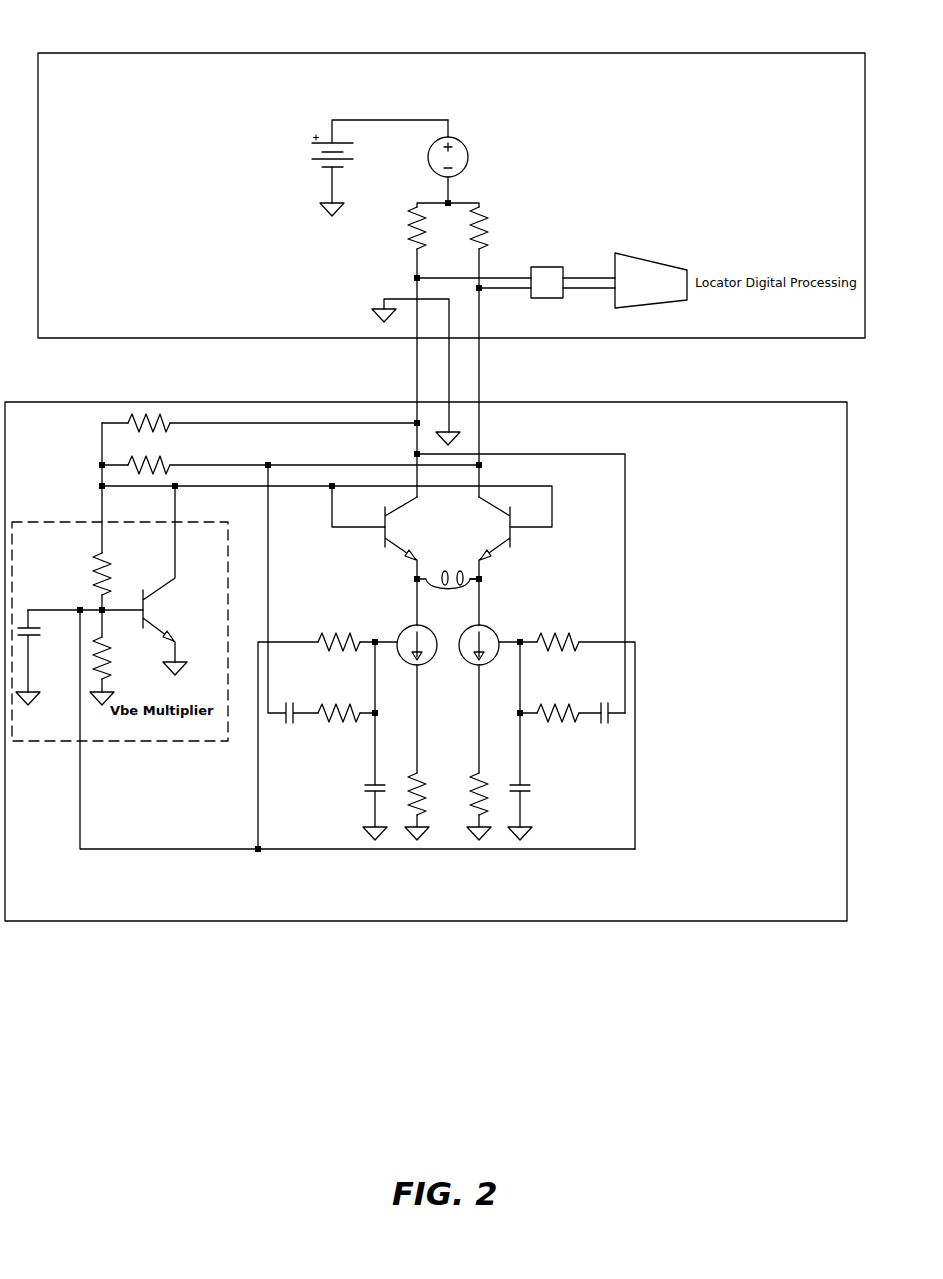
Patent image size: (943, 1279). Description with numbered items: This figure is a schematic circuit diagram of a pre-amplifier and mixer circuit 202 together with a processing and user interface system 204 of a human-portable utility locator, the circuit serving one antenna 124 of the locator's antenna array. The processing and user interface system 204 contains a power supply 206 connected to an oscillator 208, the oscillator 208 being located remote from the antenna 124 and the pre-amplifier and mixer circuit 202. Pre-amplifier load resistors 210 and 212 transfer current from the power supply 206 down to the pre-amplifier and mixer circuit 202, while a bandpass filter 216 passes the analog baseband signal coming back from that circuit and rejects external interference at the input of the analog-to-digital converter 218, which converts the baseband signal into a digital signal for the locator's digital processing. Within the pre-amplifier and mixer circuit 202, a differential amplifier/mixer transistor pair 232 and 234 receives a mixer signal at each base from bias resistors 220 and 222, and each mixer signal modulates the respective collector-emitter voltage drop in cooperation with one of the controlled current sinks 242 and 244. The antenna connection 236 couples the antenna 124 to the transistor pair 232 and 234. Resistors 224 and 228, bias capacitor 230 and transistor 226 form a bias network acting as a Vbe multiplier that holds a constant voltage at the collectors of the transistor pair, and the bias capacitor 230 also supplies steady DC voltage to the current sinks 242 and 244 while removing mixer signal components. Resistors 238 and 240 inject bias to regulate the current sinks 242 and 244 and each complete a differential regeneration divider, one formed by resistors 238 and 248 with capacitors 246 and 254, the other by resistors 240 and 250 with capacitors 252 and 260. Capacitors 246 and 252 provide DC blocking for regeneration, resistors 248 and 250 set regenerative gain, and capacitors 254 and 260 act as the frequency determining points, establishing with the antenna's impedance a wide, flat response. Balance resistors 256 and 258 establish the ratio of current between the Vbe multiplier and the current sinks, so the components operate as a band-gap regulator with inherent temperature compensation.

The pre-amplifier and mixer circuit 202 is at (710, 442).
The processing and user interface system 204 is at (142, 90).
The power supply 206 is at (335, 118).
The oscillator 208 is at (468, 157).
The pre-amplifier load resistor 210 is at (408, 245).
The pre-amplifier load resistor 212 is at (488, 240).
The bandpass filter 216 is at (548, 265).
The analog-to-digital converter 218 is at (655, 262).
The bias resistor 220 is at (135, 427).
The bias resistor 222 is at (160, 457).
The resistor 224 is at (92, 580).
The transistor 226 is at (148, 608).
The resistor 228 is at (105, 672).
The bias capacitor 230 is at (35, 638).
The differential amplifier/mixer transistor 232 is at (383, 530).
The differential amplifier/mixer transistor 234 is at (512, 530).
The antenna 124 is at (460, 567).
The antenna connection 236 is at (482, 590).
The resistor 238 is at (320, 625).
The resistor 240 is at (572, 633).
The controlled current sink 242 is at (418, 668).
The controlled current sink 244 is at (475, 668).
The capacitor 246 is at (290, 725).
The resistor 248 is at (340, 723).
The resistor 250 is at (560, 722).
The capacitor 252 is at (605, 727).
The capacitor 254 is at (363, 788).
The balance resistor 256 is at (408, 798).
The balance resistor 258 is at (470, 798).
The capacitor 260 is at (528, 790).